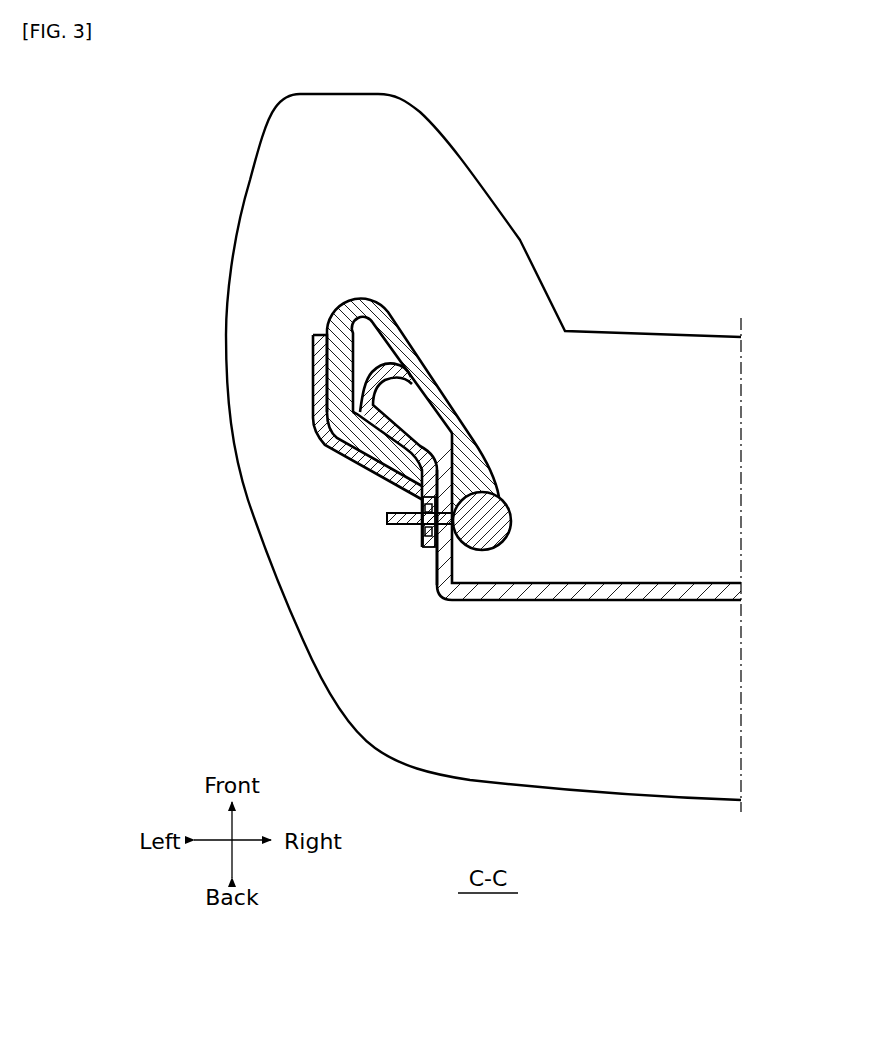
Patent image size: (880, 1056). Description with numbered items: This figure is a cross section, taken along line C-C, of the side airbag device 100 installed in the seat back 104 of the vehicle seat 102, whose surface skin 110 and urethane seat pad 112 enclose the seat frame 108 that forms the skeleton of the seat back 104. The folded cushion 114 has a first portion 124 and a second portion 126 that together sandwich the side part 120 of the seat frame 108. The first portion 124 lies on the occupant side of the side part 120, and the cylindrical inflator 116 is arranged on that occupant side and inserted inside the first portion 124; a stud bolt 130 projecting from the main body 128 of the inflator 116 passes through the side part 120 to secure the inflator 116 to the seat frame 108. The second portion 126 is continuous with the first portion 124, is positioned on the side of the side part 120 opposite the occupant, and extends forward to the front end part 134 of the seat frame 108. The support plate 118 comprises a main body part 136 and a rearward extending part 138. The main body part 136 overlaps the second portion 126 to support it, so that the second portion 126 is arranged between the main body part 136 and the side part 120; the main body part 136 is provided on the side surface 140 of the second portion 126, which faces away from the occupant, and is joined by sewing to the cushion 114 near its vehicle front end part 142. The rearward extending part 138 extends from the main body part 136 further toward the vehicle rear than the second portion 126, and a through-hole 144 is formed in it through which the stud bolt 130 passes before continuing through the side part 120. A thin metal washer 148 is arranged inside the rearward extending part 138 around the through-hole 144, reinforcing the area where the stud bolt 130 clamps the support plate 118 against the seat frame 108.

The side airbag device 100 is at (370, 414).
The vehicle seat 102 is at (498, 168).
The seat back 104 is at (334, 650).
The seat frame 108 is at (584, 602).
The surface skin 110 is at (318, 410).
The seat pad 112 is at (265, 480).
The cushion 114 is at (376, 294).
The inflator 116 is at (502, 515).
The support plate 118 is at (333, 453).
The side part 120 is at (455, 462).
The first portion 124 is at (446, 390).
The second portion 126 is at (313, 350).
The main body 128 is at (494, 538).
The stud bolt 130 is at (386, 518).
The front end part 134 is at (389, 365).
The main body part 136 is at (322, 418).
The rearward extending part 138 is at (424, 538).
The side surface 140 is at (313, 378).
The vehicle front end part 142 is at (312, 336).
The through-hole 144 is at (424, 527).
The washer 148 is at (429, 548).